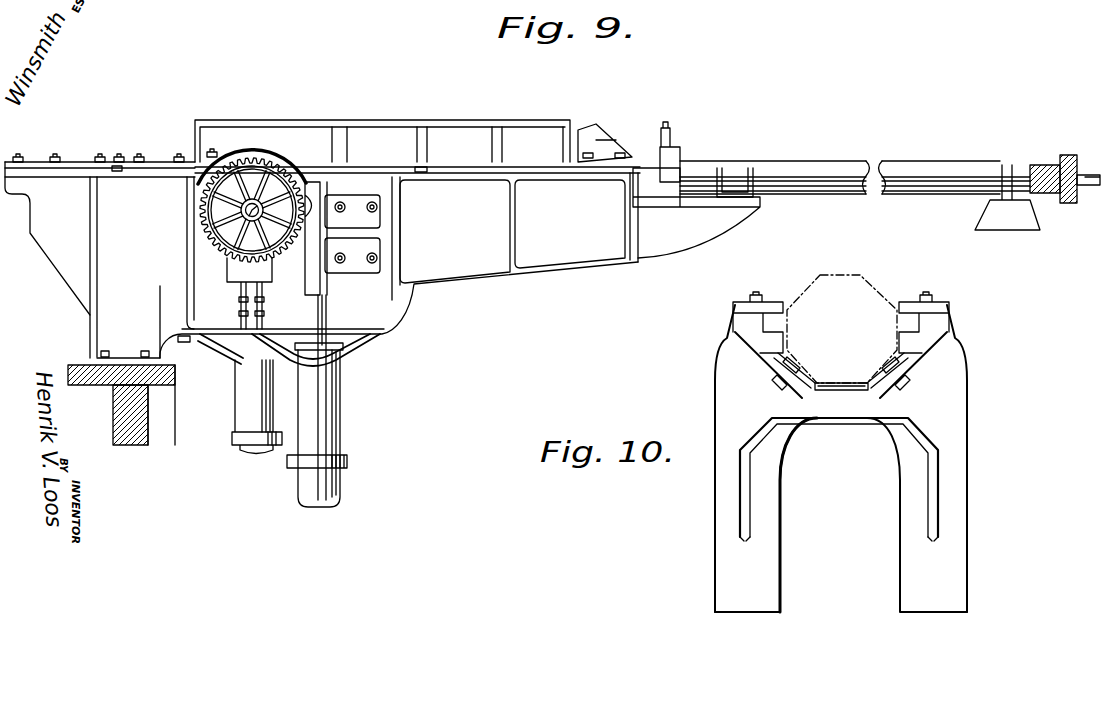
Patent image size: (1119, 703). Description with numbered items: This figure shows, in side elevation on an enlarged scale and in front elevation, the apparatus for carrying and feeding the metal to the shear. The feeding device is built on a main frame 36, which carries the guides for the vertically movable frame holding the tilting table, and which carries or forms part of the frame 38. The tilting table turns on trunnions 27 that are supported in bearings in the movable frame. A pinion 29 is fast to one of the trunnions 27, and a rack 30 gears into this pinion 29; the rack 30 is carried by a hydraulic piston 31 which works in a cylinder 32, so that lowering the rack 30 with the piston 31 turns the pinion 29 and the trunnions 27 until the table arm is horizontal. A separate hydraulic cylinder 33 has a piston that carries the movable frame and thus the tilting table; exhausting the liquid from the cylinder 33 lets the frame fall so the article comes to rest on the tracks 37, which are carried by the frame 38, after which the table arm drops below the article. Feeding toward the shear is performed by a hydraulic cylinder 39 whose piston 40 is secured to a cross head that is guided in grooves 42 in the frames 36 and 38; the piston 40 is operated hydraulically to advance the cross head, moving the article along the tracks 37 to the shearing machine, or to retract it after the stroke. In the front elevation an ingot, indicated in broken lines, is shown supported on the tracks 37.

In FIG. 9, the trunnions 27 is at (247, 208).
In FIG. 9, the pinion 29 is at (208, 236).
In FIG. 9, the rack 30 is at (307, 225).
In FIG. 9, the hydraulic piston 31 is at (323, 307).
In FIG. 9, the cylinder 32 is at (330, 416).
In FIG. 9, the hydraulic cylinder 33 is at (244, 398).
In FIG. 9, the main frame 36 is at (382, 283).
In FIG. 10, the main frame 36 is at (910, 480).
In FIG. 10, the tracks 37 is at (887, 365).
In FIG. 9, the frame 38 is at (382, 141).
In FIG. 9, the hydraulic cylinder 39 is at (893, 168).
In FIG. 9, the piston 40 is at (1042, 166).
In FIG. 10, the grooves 42 is at (910, 322).